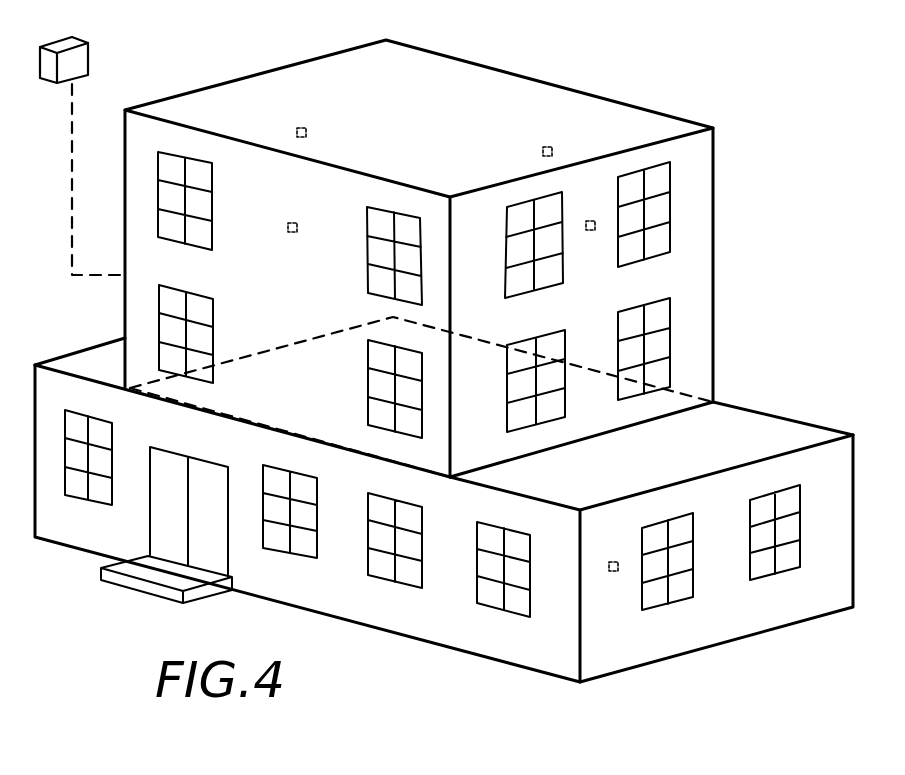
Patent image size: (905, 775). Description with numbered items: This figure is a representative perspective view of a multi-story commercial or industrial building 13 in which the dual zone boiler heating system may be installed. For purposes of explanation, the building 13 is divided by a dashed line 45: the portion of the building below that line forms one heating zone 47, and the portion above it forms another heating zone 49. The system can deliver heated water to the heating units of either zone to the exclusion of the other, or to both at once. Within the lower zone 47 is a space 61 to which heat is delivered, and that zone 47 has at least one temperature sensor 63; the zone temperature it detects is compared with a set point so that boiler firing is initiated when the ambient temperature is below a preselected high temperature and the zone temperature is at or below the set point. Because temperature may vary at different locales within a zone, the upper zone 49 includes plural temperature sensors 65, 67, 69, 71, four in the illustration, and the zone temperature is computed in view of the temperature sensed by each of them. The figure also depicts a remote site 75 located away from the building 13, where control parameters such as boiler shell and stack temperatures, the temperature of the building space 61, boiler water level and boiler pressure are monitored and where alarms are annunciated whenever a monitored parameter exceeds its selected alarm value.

The building 13 is at (480, 62).
The dashed line 45 is at (225, 415).
The zone 47 is at (340, 567).
The zone 49 is at (157, 263).
The space 61 is at (693, 452).
The temperature sensor 63 is at (612, 574).
The temperature sensor 65 is at (291, 235).
The temperature sensor 67 is at (302, 127).
The temperature sensor 69 is at (548, 146).
The temperature sensor 71 is at (592, 233).
The remote site 75 is at (85, 60).